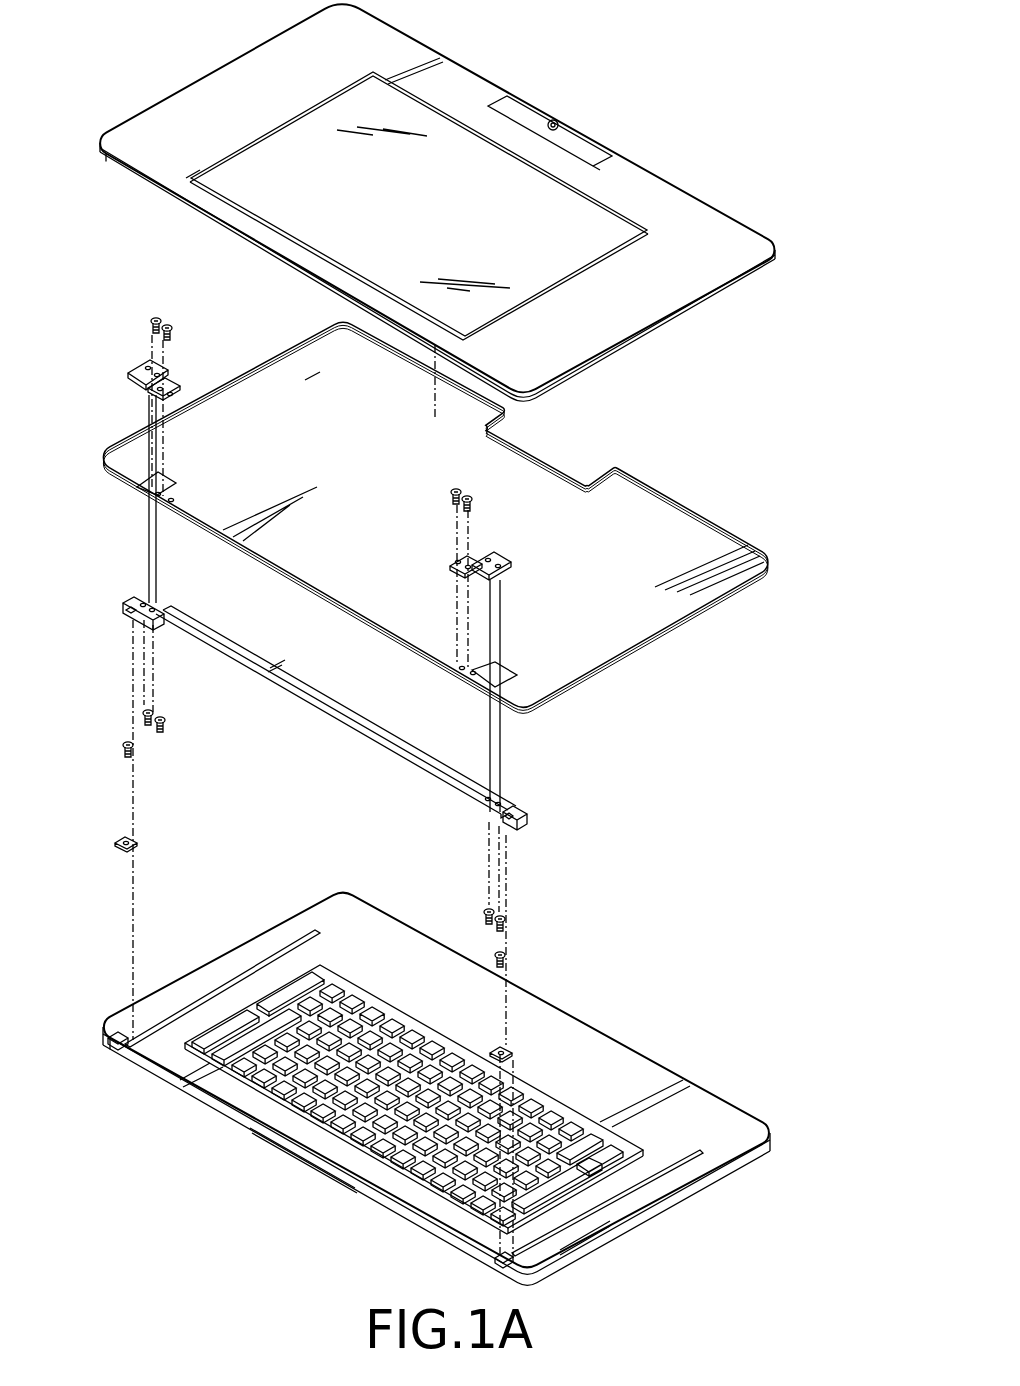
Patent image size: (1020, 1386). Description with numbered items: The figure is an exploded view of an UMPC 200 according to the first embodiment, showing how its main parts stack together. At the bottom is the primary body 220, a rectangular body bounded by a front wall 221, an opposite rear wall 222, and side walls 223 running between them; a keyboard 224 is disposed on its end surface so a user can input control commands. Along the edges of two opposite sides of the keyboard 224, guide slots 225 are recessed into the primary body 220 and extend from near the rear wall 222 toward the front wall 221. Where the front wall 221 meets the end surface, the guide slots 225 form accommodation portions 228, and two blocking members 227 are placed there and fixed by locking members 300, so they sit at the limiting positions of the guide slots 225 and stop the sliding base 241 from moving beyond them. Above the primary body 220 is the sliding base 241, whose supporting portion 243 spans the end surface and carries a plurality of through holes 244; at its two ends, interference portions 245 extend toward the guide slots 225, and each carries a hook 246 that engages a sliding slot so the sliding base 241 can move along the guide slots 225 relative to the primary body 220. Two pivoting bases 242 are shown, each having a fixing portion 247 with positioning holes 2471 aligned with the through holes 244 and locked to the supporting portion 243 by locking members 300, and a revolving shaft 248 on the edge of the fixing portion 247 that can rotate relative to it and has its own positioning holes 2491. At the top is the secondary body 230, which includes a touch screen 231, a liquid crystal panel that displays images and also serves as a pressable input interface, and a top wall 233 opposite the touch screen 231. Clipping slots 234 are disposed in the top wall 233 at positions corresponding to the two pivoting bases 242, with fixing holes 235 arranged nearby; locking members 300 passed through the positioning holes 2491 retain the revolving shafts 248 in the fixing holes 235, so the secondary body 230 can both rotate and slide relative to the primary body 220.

The UMPC 200 is at (852, 77).
The primary body 220 is at (800, 1132).
The front wall 221 is at (740, 1098).
The rear wall 222 is at (366, 1197).
The side walls 223 is at (618, 1242).
The keyboard 224 is at (555, 1182).
The guide slots 225 is at (225, 985).
The blocking members 227 is at (116, 842).
The accommodation portions 228 is at (112, 1046).
The secondary body 230 is at (805, 212).
The touch screen 231 is at (730, 272).
The top wall 233 is at (705, 545).
The clipping slots 234 is at (145, 478).
The fixing holes 235 is at (172, 500).
The sliding base 241 is at (112, 603).
The pivoting bases 242 is at (120, 368).
The supporting portion 243 is at (325, 702).
The through holes 244 is at (143, 602).
The interference portions 245 is at (127, 607).
The hooks 246 is at (130, 612).
The fixing portion 247 is at (140, 370).
The positioning holes 2471 is at (150, 364).
The revolving shaft 248 is at (176, 390).
The positioning holes 2491 is at (170, 398).
The locking members 300 is at (172, 324).